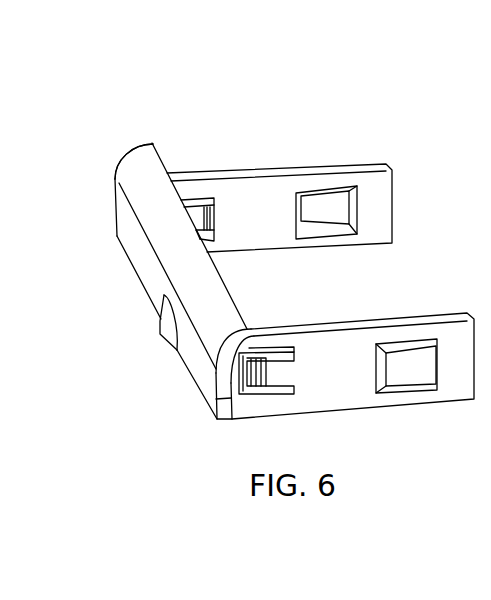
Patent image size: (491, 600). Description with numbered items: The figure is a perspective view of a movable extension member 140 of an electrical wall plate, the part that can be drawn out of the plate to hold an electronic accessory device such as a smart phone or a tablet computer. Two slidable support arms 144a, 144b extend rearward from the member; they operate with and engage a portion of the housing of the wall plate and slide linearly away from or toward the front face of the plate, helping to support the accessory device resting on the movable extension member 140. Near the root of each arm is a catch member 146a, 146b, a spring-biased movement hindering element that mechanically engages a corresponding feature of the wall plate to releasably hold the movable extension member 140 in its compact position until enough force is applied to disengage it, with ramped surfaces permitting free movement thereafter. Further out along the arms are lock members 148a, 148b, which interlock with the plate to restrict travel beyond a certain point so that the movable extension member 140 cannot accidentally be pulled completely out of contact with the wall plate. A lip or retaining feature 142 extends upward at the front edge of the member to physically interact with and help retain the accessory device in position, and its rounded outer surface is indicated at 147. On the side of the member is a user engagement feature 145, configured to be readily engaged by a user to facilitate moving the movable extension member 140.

The movable extension member 140 is at (255, 233).
The lip or retaining feature 142 is at (138, 146).
The slidable support arm 144a is at (328, 382).
The slidable support arm 144b is at (250, 165).
The user engagement feature 145 is at (156, 329).
The catch member 146a is at (261, 366).
The catch member 146b is at (188, 204).
The curved top surface 147 is at (119, 216).
The lock member 148a is at (399, 356).
The lock member 148b is at (312, 203).